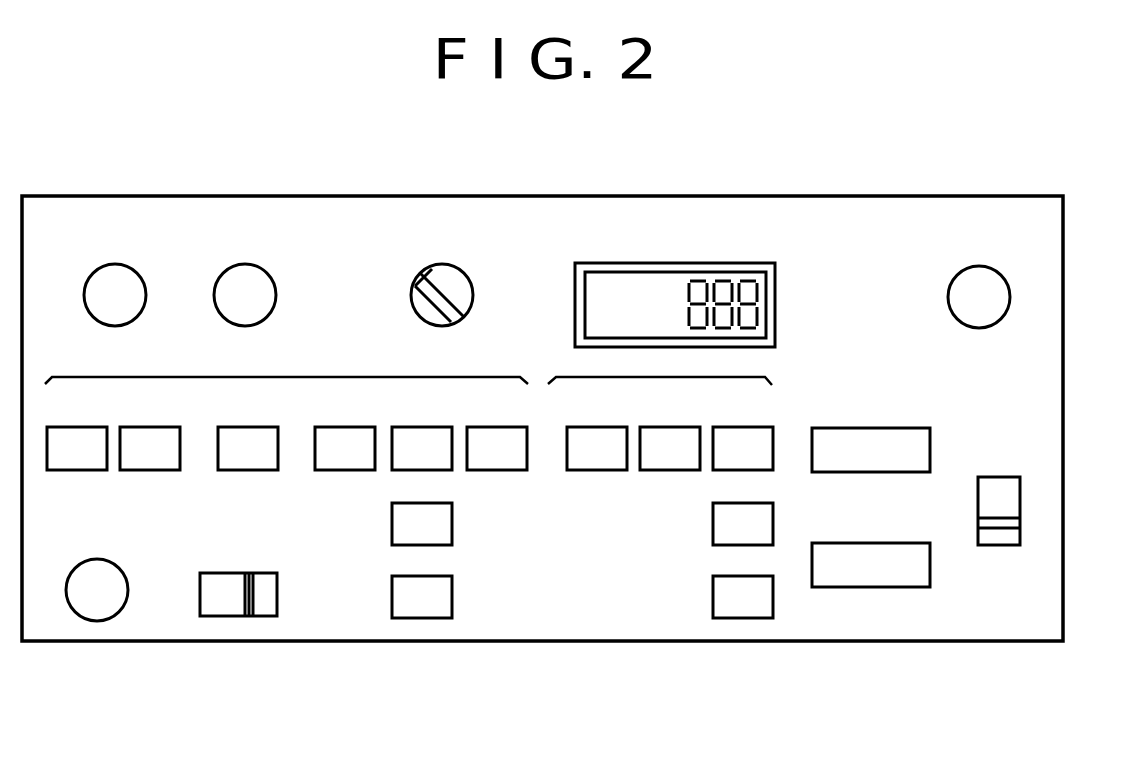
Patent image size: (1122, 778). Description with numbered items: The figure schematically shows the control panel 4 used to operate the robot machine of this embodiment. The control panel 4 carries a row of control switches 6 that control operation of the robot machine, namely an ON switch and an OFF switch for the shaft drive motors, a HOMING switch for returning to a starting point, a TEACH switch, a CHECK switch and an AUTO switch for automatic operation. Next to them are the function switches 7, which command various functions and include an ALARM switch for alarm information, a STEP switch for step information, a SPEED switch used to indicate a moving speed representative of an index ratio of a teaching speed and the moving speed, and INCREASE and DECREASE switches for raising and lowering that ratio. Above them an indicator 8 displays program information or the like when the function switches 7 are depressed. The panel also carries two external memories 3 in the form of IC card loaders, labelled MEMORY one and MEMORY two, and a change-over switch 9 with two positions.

The external memories 3 is at (818, 455).
The control panel 4 is at (107, 642).
The control switches 6 is at (160, 378).
The function switches 7 is at (763, 378).
The indicator 8 is at (590, 297).
The change-over switch 9 is at (1023, 506).